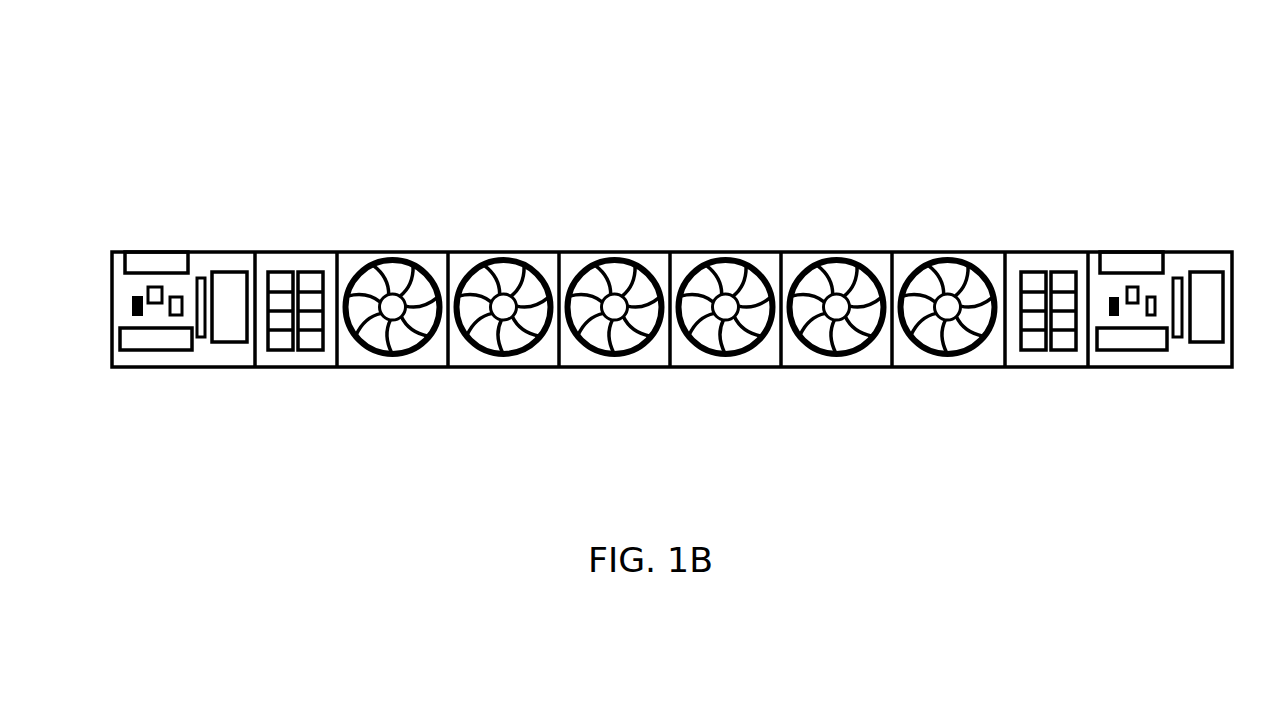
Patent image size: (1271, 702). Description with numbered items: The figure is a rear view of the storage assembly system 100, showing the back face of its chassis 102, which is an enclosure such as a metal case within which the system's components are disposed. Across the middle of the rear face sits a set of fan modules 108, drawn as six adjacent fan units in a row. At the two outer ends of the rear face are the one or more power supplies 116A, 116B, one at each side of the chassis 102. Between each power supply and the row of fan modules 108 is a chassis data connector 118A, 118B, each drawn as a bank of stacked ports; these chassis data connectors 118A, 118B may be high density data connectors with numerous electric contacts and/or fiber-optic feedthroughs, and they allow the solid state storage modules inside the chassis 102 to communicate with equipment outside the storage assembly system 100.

The storage assembly system 100 is at (1020, 105).
The chassis 102 is at (162, 362).
The fan modules 108 is at (658, 258).
The power supply 116A is at (143, 258).
The power supply 116B is at (1120, 258).
The chassis data connector 118A is at (303, 358).
The chassis data connector 118B is at (1062, 352).